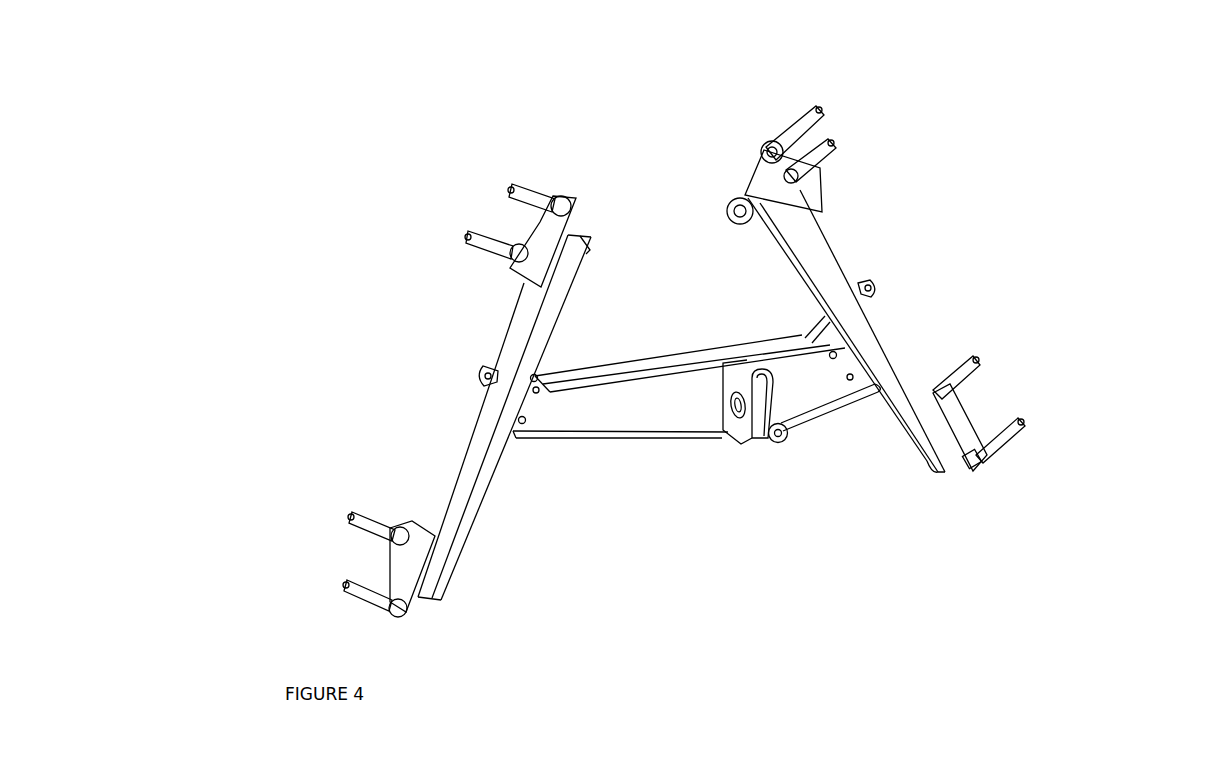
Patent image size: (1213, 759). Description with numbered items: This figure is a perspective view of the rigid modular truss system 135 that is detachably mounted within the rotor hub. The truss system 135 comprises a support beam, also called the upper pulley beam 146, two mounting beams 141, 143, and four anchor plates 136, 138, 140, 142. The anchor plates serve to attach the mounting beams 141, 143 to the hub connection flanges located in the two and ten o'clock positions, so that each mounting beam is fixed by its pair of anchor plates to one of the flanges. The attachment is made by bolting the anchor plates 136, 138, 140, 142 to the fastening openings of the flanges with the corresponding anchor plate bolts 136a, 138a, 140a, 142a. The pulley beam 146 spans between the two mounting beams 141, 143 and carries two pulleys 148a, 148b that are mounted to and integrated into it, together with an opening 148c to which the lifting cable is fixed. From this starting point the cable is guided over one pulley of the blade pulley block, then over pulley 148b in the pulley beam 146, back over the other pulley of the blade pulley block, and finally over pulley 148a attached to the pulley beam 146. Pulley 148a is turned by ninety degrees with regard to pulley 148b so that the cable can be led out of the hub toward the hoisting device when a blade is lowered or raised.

The rigid modular truss system 135 is at (607, 179).
The anchor plate 136 is at (538, 228).
The anchor plate bolts 136a is at (510, 192).
The anchor plate 138 is at (407, 568).
The anchor plate bolts 138a is at (353, 523).
The anchor plate 140 is at (827, 198).
The anchor plate bolts 140a is at (800, 118).
The mounting beam 141 is at (503, 412).
The anchor plate 142 is at (957, 418).
The anchor plate bolts 142a is at (1007, 435).
The mounting beam 143 is at (883, 350).
The support beam 146 is at (590, 407).
The pulley 148a is at (746, 436).
The pulley 148b is at (758, 362).
The opening 148c is at (781, 445).